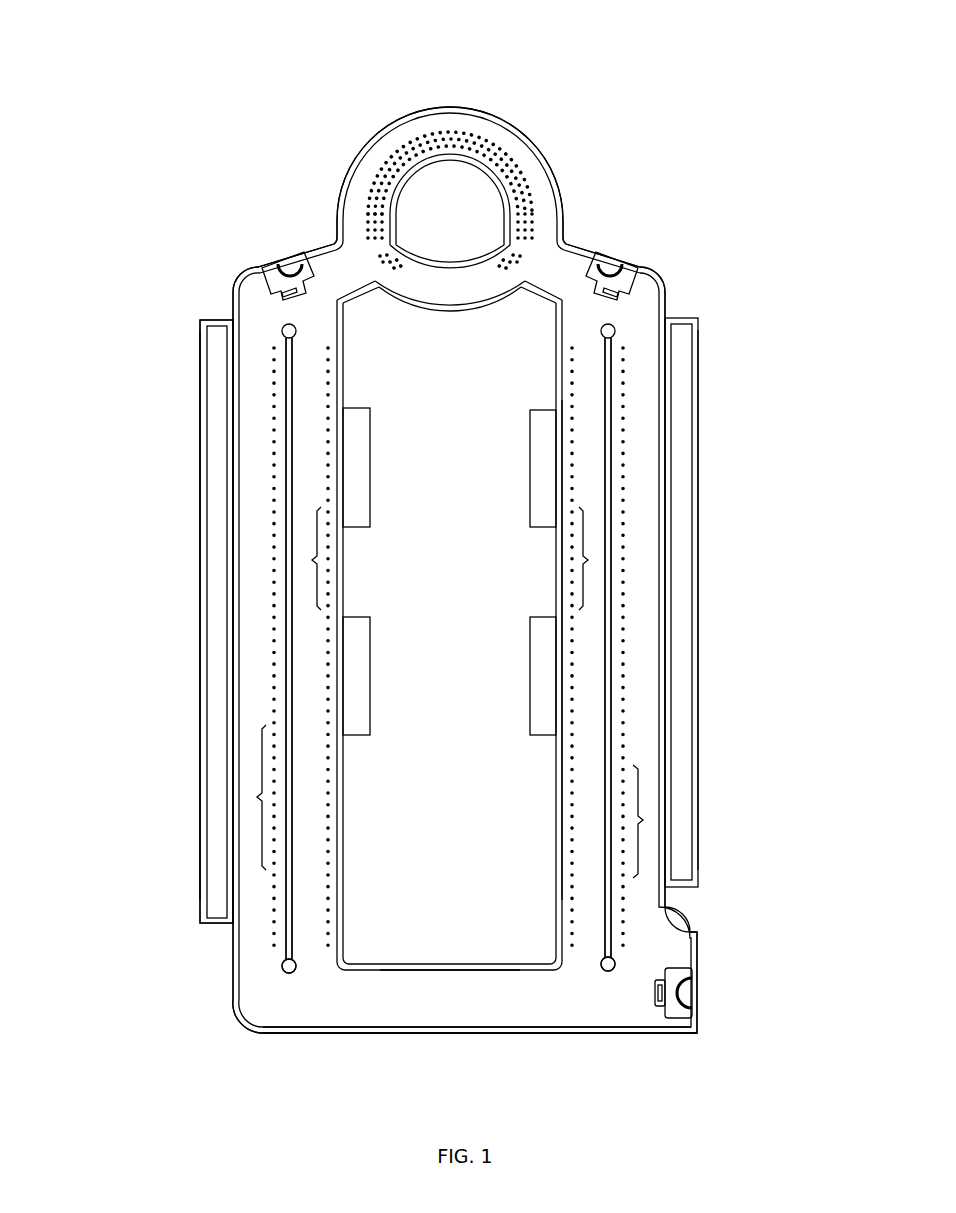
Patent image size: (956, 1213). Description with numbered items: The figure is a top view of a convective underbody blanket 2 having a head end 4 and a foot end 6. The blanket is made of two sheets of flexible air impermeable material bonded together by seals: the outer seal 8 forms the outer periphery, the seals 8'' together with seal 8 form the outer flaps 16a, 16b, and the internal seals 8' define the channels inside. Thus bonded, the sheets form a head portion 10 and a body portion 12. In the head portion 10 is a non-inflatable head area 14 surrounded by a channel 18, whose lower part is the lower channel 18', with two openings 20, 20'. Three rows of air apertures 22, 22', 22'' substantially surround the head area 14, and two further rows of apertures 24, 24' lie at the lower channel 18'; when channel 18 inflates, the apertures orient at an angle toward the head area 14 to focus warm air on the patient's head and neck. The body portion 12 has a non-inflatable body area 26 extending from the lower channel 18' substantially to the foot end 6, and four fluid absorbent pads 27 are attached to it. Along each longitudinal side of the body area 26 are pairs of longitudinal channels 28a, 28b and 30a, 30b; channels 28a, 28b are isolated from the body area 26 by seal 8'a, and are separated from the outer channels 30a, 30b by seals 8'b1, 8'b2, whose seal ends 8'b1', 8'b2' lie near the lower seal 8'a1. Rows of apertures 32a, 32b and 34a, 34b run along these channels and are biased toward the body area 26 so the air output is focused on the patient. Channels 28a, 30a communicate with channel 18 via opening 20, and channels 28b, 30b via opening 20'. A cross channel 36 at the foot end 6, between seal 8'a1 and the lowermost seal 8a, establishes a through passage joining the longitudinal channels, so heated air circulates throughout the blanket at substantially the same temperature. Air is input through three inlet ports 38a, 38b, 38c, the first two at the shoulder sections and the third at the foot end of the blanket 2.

The convective underbody blanket 2 is at (208, 180).
The head end 4 is at (444, 80).
The foot end 6 is at (364, 1036).
The outer seal 8 is at (487, 648).
The internal seals 8' is at (508, 211).
The flap seals 8'' is at (444, 615).
The lowermost seal 8a is at (478, 1035).
The body area seal 8'a is at (513, 650).
The lower body seal 8'a1 is at (450, 932).
The channel separating seal 8'b1 is at (198, 648).
The channel separating seal 8'b2 is at (694, 647).
The seal end 8'b1' is at (216, 970).
The seal end 8'b2' is at (699, 948).
The head portion 10 is at (566, 149).
The body portion 12 is at (175, 470).
The non-inflatable head area 14 is at (438, 224).
The outer flap 16a is at (225, 708).
The outer flap 16b is at (672, 710).
The channel 18 is at (427, 161).
The lower channel 18' is at (450, 295).
The opening 20 is at (305, 227).
The opening 20' is at (606, 227).
The air apertures 22 is at (470, 148).
The air apertures 22' is at (489, 163).
The air apertures 22'' is at (454, 136).
The apertures 24 is at (446, 299).
The apertures 24' is at (449, 318).
The non-inflatable body area 26 is at (458, 575).
The fluid absorbent pad 27 is at (360, 455).
The longitudinal channel 28a is at (307, 368).
The longitudinal channel 28b is at (590, 365).
The longitudinal channel 30a is at (245, 422).
The longitudinal channel 30b is at (640, 400).
The row of apertures 32a is at (313, 560).
The row of apertures 32b is at (588, 557).
The row of apertures 34a is at (258, 797).
The row of apertures 34b is at (643, 820).
The cross channel 36 is at (466, 1008).
The inlet port 38a is at (280, 262).
The inlet port 38b is at (620, 260).
The inlet port 38c is at (699, 993).